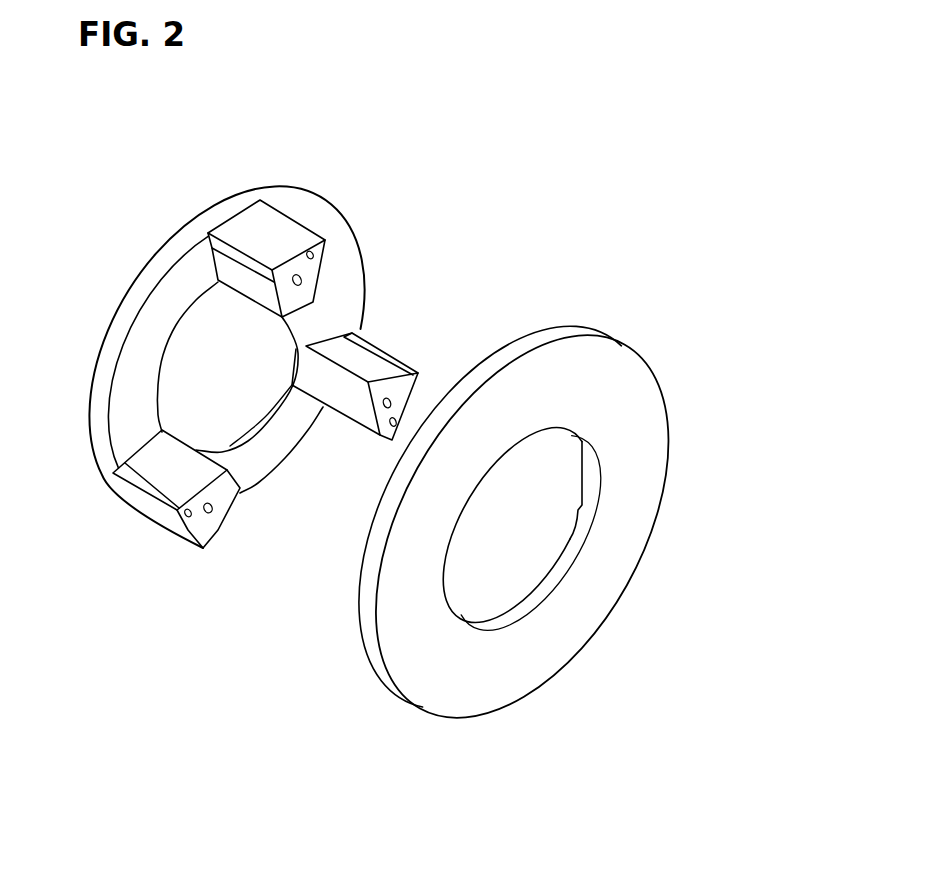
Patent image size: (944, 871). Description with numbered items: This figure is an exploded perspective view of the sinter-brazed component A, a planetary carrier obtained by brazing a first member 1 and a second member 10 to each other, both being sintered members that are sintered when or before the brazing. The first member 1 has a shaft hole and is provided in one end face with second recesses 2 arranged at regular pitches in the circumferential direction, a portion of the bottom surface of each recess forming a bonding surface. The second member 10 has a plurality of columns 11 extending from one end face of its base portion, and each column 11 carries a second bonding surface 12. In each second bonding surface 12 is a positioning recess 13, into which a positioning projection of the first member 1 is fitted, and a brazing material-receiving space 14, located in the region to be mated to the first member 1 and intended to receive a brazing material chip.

The second member 10 is at (301, 185).
The columns 11 is at (285, 232).
The second bonding surface 12 is at (229, 499).
The positioning recess 13 is at (314, 256).
The brazing material-receiving spaces 14 is at (302, 282).
The first member 1 is at (608, 336).
The second recesses 2 is at (566, 540).
The sinter-brazed component A is at (521, 257).